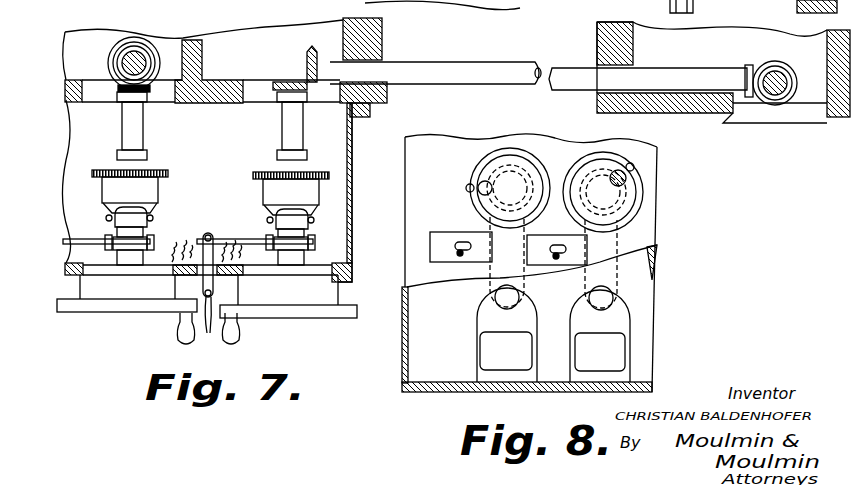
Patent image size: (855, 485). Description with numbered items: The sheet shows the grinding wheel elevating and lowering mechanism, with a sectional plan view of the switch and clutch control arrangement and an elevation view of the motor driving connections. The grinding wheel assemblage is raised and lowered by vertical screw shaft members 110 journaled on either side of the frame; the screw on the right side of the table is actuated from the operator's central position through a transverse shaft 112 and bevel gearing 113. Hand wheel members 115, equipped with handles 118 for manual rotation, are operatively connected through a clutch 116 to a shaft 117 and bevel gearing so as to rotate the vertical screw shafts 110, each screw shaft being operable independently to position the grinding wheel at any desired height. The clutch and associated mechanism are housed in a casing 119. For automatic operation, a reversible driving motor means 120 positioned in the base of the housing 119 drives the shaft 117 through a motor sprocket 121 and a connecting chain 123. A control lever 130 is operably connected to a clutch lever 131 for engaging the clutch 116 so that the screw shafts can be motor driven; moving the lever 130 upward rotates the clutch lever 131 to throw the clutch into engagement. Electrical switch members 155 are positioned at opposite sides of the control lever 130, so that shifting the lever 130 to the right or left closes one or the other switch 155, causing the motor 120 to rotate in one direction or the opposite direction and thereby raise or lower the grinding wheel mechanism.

In FIG. 7, the vertical screw shaft member 110 is at (125, 62).
In FIG. 7, the transverse shaft 112 is at (468, 68).
In FIG. 7, the bevel gearing 113 is at (130, 40).
In FIG. 7, the hand wheel member 115 is at (124, 312).
In FIG. 8, the hand wheel member 115 is at (478, 168).
In FIG. 7, the clutch 116 is at (270, 188).
In FIG. 7, the shaft 117 is at (134, 130).
In FIG. 7, the handle 118 is at (240, 329).
In FIG. 7, the casing 119 is at (353, 130).
In FIG. 8, the reversible driving motor means 120 is at (527, 296).
In FIG. 7, the motor sprocket 121 is at (166, 170).
In FIG. 8, the motor sprocket 121 is at (500, 295).
In FIG. 8, the connecting chain 123 is at (650, 262).
In FIG. 7, the control lever 130 is at (204, 329).
In FIG. 8, the control lever 130 is at (460, 252).
In FIG. 7, the clutch lever 131 is at (240, 216).
In FIG. 7, the electrical switch 155 is at (177, 273).